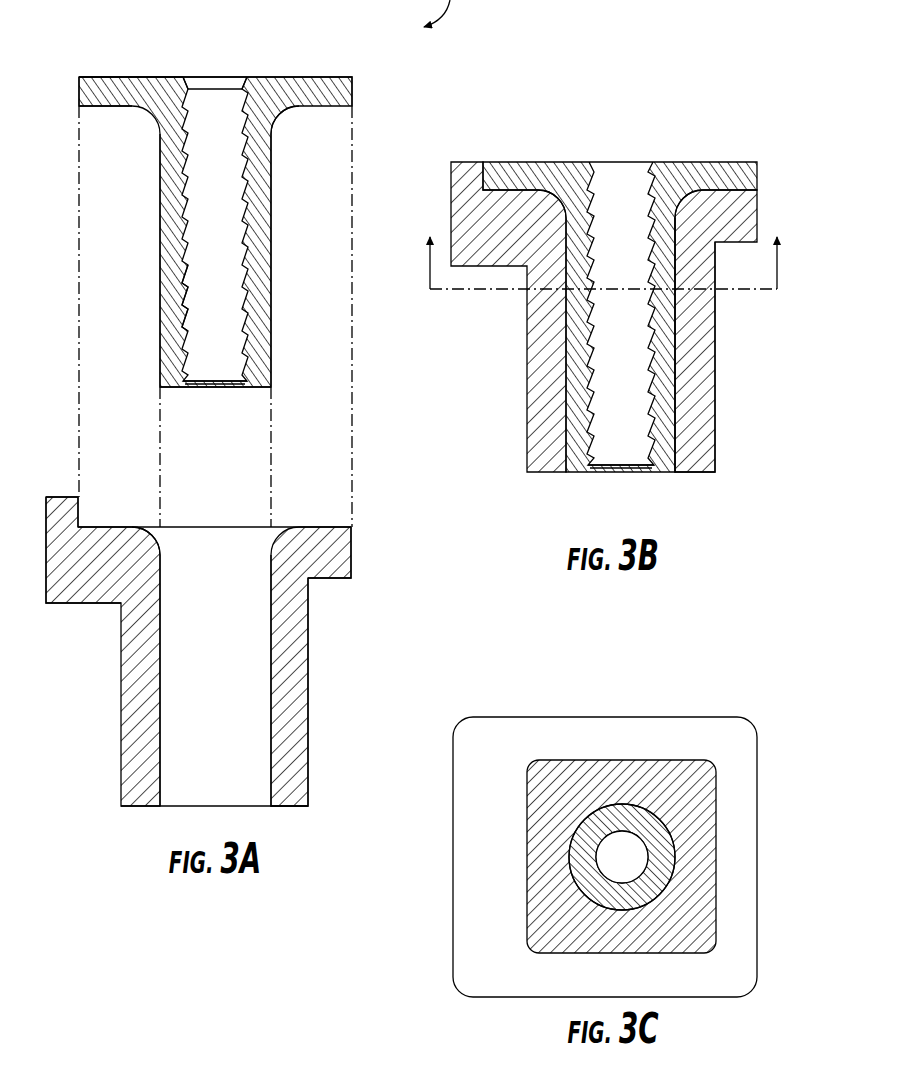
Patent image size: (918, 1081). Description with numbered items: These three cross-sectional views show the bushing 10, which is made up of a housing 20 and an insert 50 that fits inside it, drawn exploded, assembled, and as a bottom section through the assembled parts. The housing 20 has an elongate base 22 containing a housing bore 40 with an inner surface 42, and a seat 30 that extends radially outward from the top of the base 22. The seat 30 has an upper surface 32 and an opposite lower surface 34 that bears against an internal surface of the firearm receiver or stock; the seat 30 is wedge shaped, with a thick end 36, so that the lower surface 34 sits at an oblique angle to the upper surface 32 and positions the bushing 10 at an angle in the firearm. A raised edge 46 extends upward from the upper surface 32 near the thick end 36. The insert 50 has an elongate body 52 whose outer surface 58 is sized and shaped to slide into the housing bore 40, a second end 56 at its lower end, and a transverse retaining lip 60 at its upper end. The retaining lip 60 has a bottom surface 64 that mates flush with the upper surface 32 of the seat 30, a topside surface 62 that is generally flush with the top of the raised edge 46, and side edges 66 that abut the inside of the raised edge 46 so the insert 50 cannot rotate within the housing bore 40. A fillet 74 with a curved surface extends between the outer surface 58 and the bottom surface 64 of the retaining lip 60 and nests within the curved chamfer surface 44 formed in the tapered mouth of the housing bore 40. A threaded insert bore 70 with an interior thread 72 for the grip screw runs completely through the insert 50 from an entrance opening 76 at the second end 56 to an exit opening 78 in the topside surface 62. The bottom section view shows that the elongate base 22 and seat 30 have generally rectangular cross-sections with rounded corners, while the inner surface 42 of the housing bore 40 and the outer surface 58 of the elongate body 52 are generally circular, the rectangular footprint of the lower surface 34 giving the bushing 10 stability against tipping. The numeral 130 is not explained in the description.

In FIG. 3B, the bushing 10 is at (468, 362).
In FIG. 3A, the housing 20 is at (58, 668).
In FIG. 3B, the housing 20 is at (534, 398).
In FIG. 3A, the elongate base 22 is at (309, 702).
In FIG. 3B, the elongate base 22 is at (716, 367).
In FIG. 3C, the elongate base 22 is at (605, 759).
In FIG. 3C, the seat 30 is at (505, 716).
In FIG. 3A, the upper surface 32 is at (99, 526).
In FIG. 3C, the lower surface 34 is at (474, 865).
In FIG. 3A, the thick end 36 is at (45, 556).
In FIG. 3A, the housing bore 40 is at (199, 689).
In FIG. 3A, the inner surface 42 is at (161, 632).
In FIG. 3A, the curved chamfer surface 44 is at (152, 540).
In FIG. 3A, the raised edge 46 is at (66, 496).
In FIG. 3A, the insert 50 is at (88, 230).
In FIG. 3B, the insert 50 is at (518, 172).
In FIG. 3A, the elongate body 52 is at (272, 236).
In FIG. 3C, the elongate body 52 is at (655, 826).
In FIG. 3A, the second end 56 is at (285, 394).
In FIG. 3A, the outer surface 58 is at (160, 298).
In FIG. 3A, the retaining lip 60 is at (353, 90).
In FIG. 3A, the topside surface 62 is at (122, 74).
In FIG. 3A, the bottom surface 64 is at (107, 107).
In FIG. 3A, the side edge 66 is at (75, 78).
In FIG. 3A, the insert bore 70 is at (206, 219).
In FIG. 3B, the insert bore 70 is at (607, 334).
In FIG. 3C, the insert bore 70 is at (613, 869).
In FIG. 3A, the interior thread 72 is at (190, 313).
In FIG. 3A, the fillet 74 is at (281, 118).
In FIG. 3A, the entrance opening 76 is at (225, 397).
In FIG. 3B, the entrance opening 76 is at (621, 479).
In FIG. 3A, the exit opening 78 is at (218, 70).
In FIG. 3A, the flange edge 130 is at (352, 556).